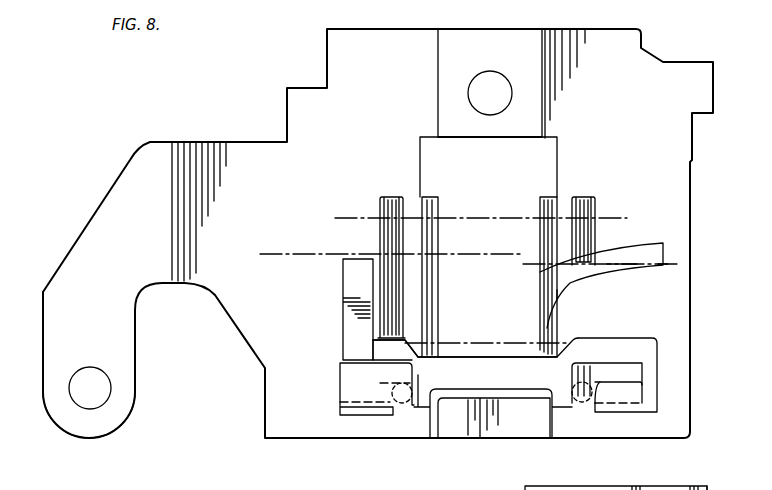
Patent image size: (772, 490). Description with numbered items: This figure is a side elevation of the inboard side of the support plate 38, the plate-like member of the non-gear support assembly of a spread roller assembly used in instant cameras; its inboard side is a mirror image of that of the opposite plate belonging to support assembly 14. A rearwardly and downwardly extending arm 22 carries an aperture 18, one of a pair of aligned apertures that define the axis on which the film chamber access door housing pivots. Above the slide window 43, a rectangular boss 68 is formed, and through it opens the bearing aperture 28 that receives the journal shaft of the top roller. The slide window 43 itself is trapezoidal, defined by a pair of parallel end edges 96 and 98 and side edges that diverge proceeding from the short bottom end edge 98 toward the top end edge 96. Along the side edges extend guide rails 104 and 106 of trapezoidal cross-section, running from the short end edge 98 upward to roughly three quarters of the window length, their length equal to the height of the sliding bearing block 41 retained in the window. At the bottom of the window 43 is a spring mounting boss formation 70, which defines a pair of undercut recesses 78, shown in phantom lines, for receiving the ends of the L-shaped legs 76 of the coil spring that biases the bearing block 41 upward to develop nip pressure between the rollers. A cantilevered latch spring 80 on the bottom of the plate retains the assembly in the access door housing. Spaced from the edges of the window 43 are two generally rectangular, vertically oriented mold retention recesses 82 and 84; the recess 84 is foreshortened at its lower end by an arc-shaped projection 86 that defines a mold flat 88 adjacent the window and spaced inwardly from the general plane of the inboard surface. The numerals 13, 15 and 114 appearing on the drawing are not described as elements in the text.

The support plate 38 is at (648, 53).
The rectangular boss 68 is at (508, 58).
The bearing aperture 28 is at (503, 104).
The end edge 96 is at (468, 140).
The slide window 43 is at (528, 170).
The mold retention recess 84 is at (588, 197).
The mold retention recess 82 is at (388, 215).
The guide rail 104 is at (435, 203).
The arc-shaped projection 86 is at (626, 245).
The mold flat 88 is at (630, 255).
The section line 13 is at (358, 165).
The support assembly 14 is at (290, 210).
The section line 15 is at (413, 331).
The guide rail 106 is at (548, 296).
The end edge 98 is at (474, 357).
The spring mounting boss formation 70 is at (582, 355).
The undercut recesses 78 is at (373, 374).
The L-shaped legs 76 is at (403, 403).
The cantilevered latch spring 80 is at (492, 425).
The arm 22 is at (120, 350).
The aperture 18 is at (95, 391).
The base rail 114 is at (600, 478).
The bearing block 41 is at (722, 489).